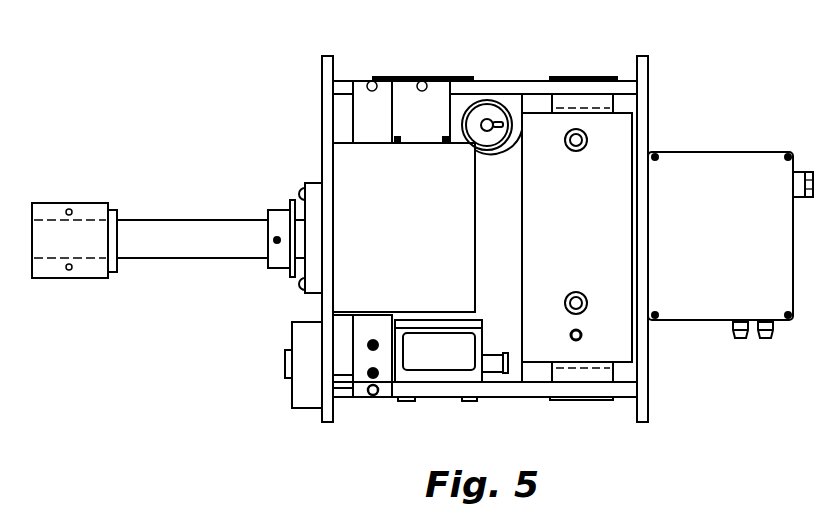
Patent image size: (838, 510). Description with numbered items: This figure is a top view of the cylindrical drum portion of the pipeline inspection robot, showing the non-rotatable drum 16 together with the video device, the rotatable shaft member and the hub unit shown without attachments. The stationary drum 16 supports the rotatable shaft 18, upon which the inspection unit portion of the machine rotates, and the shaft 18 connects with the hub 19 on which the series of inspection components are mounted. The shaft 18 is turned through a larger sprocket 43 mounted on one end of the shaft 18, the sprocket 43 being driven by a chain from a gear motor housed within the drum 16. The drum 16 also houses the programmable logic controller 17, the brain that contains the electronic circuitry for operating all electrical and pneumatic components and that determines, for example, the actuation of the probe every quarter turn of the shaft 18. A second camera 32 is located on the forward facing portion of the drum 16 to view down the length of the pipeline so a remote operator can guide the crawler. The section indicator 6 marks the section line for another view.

The section line 6- 6 is at (228, 279).
The drum 16 is at (641, 80).
The programmable logic controller 17 is at (380, 163).
The rotatable shaft 18 is at (180, 220).
The hub 19 is at (88, 203).
The second camera 32 is at (292, 338).
The larger sprocket 43 is at (292, 200).